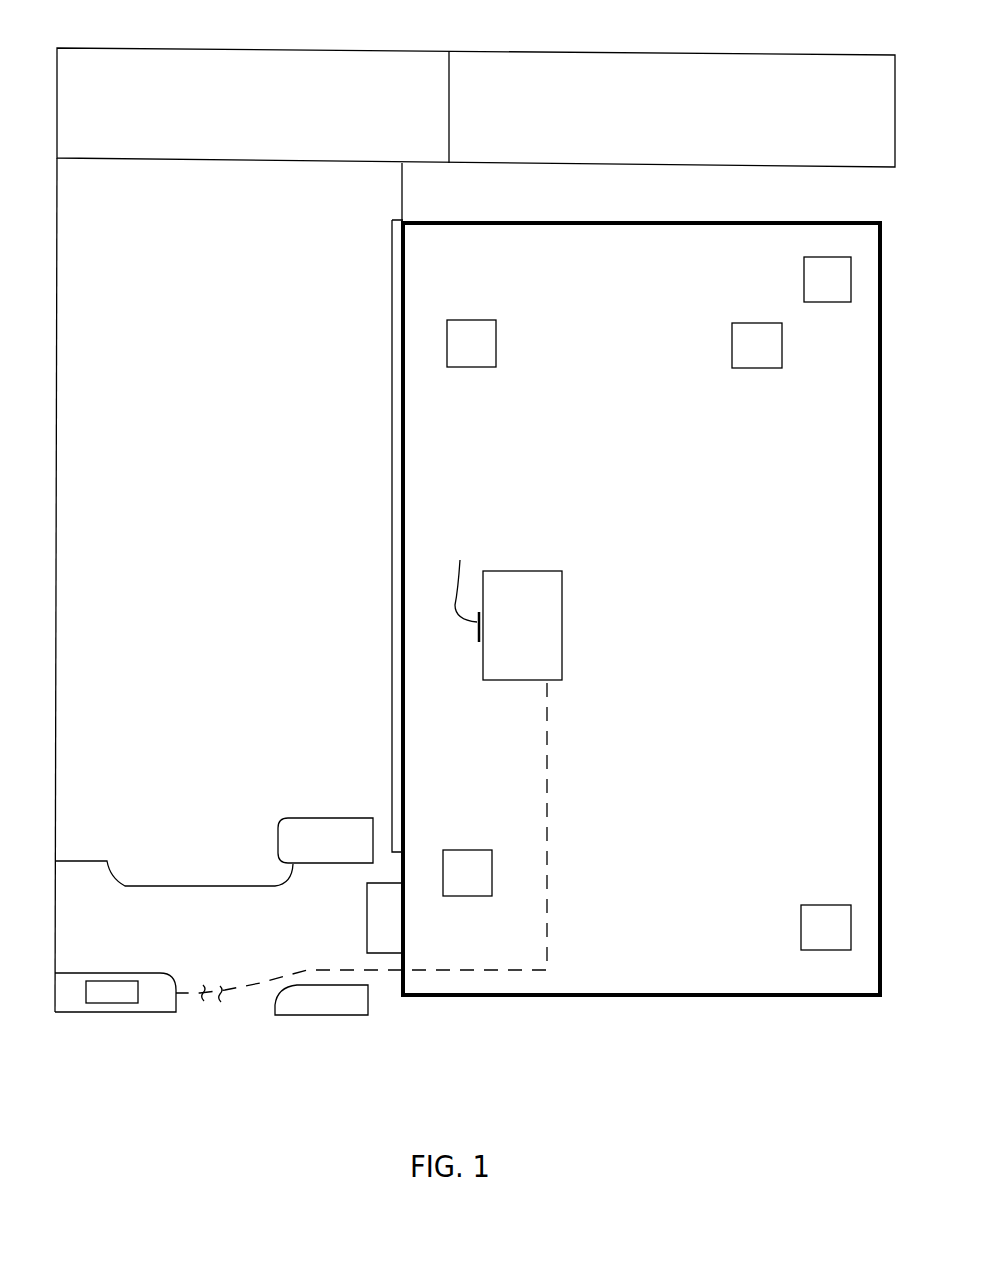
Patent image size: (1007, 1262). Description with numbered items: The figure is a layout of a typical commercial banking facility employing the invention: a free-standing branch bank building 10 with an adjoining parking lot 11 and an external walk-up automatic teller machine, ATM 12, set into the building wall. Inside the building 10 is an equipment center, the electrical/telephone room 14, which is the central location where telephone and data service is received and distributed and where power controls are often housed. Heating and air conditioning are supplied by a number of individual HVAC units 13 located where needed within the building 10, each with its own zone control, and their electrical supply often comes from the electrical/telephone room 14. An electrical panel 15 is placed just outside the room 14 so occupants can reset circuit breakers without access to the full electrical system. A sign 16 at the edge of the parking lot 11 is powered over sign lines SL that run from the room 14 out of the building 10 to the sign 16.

The branch bank building 10 is at (633, 222).
The parking lot 11 is at (234, 256).
The ATM 12 is at (366, 915).
The individual units 13 is at (473, 322).
The electrical/telephone room 14 is at (562, 573).
The electrical panel 15 is at (483, 652).
The sign 16 is at (120, 985).
The sign lines SL is at (549, 779).